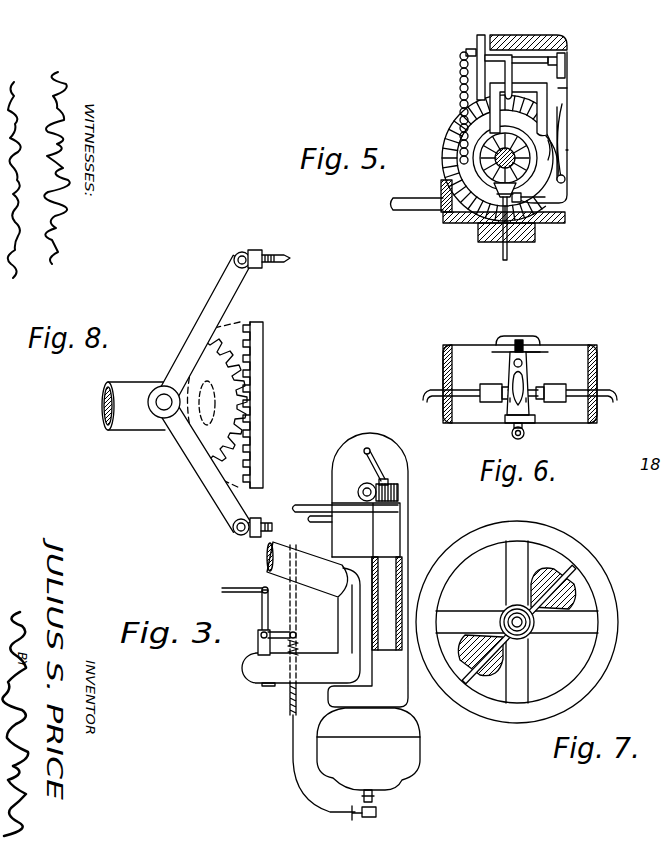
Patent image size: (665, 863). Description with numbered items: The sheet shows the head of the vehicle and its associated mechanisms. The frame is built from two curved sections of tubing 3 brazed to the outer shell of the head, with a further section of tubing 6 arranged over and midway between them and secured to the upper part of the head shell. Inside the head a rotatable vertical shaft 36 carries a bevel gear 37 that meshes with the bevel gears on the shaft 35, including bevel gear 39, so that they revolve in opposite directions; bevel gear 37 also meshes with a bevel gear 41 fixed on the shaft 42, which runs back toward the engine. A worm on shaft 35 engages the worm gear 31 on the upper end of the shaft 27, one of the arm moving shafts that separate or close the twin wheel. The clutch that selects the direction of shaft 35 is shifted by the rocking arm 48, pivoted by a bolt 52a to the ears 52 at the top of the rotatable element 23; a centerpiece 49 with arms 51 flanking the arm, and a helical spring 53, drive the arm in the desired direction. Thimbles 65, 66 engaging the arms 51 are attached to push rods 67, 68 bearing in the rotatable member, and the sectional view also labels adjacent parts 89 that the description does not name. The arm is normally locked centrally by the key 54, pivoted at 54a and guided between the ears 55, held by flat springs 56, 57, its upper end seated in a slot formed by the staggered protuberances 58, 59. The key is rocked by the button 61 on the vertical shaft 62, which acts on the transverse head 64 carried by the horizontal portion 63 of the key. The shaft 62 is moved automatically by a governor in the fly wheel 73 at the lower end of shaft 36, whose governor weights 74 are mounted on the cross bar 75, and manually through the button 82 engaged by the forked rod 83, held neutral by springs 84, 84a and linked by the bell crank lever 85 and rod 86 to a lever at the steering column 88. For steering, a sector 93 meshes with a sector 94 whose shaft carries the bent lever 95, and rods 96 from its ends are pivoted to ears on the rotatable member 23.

In FIG. 3, the sections of tubing 3 is at (301, 627).
In FIG. 3, the section of tubing 6 is at (307, 569).
In FIG. 5, the rotatable element 23 is at (480, 44).
In FIG. 6, the rotatable element 23 is at (597, 370).
In FIG. 3, the shaft 27 is at (400, 578).
In FIG. 3, the worm gear 31 is at (400, 496).
In FIG. 5, the shaft 35 is at (500, 165).
In FIG. 5, the rotatable vertical shaft 36 is at (500, 243).
In FIG. 5, the bevel gear 37 is at (567, 220).
In FIG. 5, the bevel gear 39 is at (446, 134).
In FIG. 5, the bevel gear 41 is at (447, 210).
In FIG. 5, the shaft 42 is at (393, 206).
In FIG. 3, the shaft 42 is at (322, 519).
In FIG. 5, the rocking arm 48 is at (548, 125).
In FIG. 5, the centerpiece 49 is at (560, 48).
In FIG. 6, the centerpiece 49 is at (530, 382).
In FIG. 5, the arms 51 is at (505, 75).
In FIG. 5, the ears 52 is at (558, 60).
In FIG. 5, the bolt 52a is at (466, 54).
In FIG. 5, the helical spring 53 is at (460, 102).
In FIG. 6, the helical spring 53 is at (524, 437).
In FIG. 5, the key 54 is at (567, 106).
In FIG. 6, the key 54 is at (522, 346).
In FIG. 5, the pivot 54a is at (565, 179).
In FIG. 5, the ears 55 is at (565, 90).
In FIG. 5, the flat spring 56 is at (567, 136).
In FIG. 5, the flat spring 57 is at (567, 150).
In FIG. 5, the protuberance 58 is at (567, 68).
In FIG. 6, the protuberance 58 is at (507, 340).
In FIG. 6, the protuberance 59 is at (535, 353).
In FIG. 5, the button 61 is at (500, 192).
In FIG. 5, the vertical shaft 62 is at (508, 257).
In FIG. 3, the vertical shaft 62 is at (374, 800).
In FIG. 5, the horizontal portion 63 is at (548, 198).
In FIG. 5, the transverse head 64 is at (518, 186).
In FIG. 6, the thimble 65 is at (490, 388).
In FIG. 6, the thimble 66 is at (556, 396).
In FIG. 6, the push rod 67 is at (428, 386).
In FIG. 3, the push rod 67 is at (388, 472).
In FIG. 6, the push rod 68 is at (619, 388).
In FIG. 3, the fly wheel 73 is at (412, 724).
In FIG. 7, the fly wheel 73 is at (440, 588).
In FIG. 7, the governor weights 74 is at (566, 596).
In FIG. 7, the cross bar 75 is at (560, 570).
In FIG. 3, the button 82 is at (377, 813).
In FIG. 3, the rod 83 is at (292, 768).
In FIG. 3, the spring 84 is at (289, 702).
In FIG. 3, the spring 84a is at (298, 650).
In FIG. 3, the bell crank lever 85 is at (270, 611).
In FIG. 3, the rod 86 is at (234, 587).
In FIG. 8, the steering column 88 is at (136, 418).
In FIG. 6, the arms 89 is at (510, 400).
In FIG. 8, the sector 93 is at (264, 422).
In FIG. 8, the sector 94 is at (240, 383).
In FIG. 8, the bent lever 95 is at (213, 296).
In FIG. 8, the rods 96 is at (271, 257).
In FIG. 3, the rods 96 is at (300, 506).